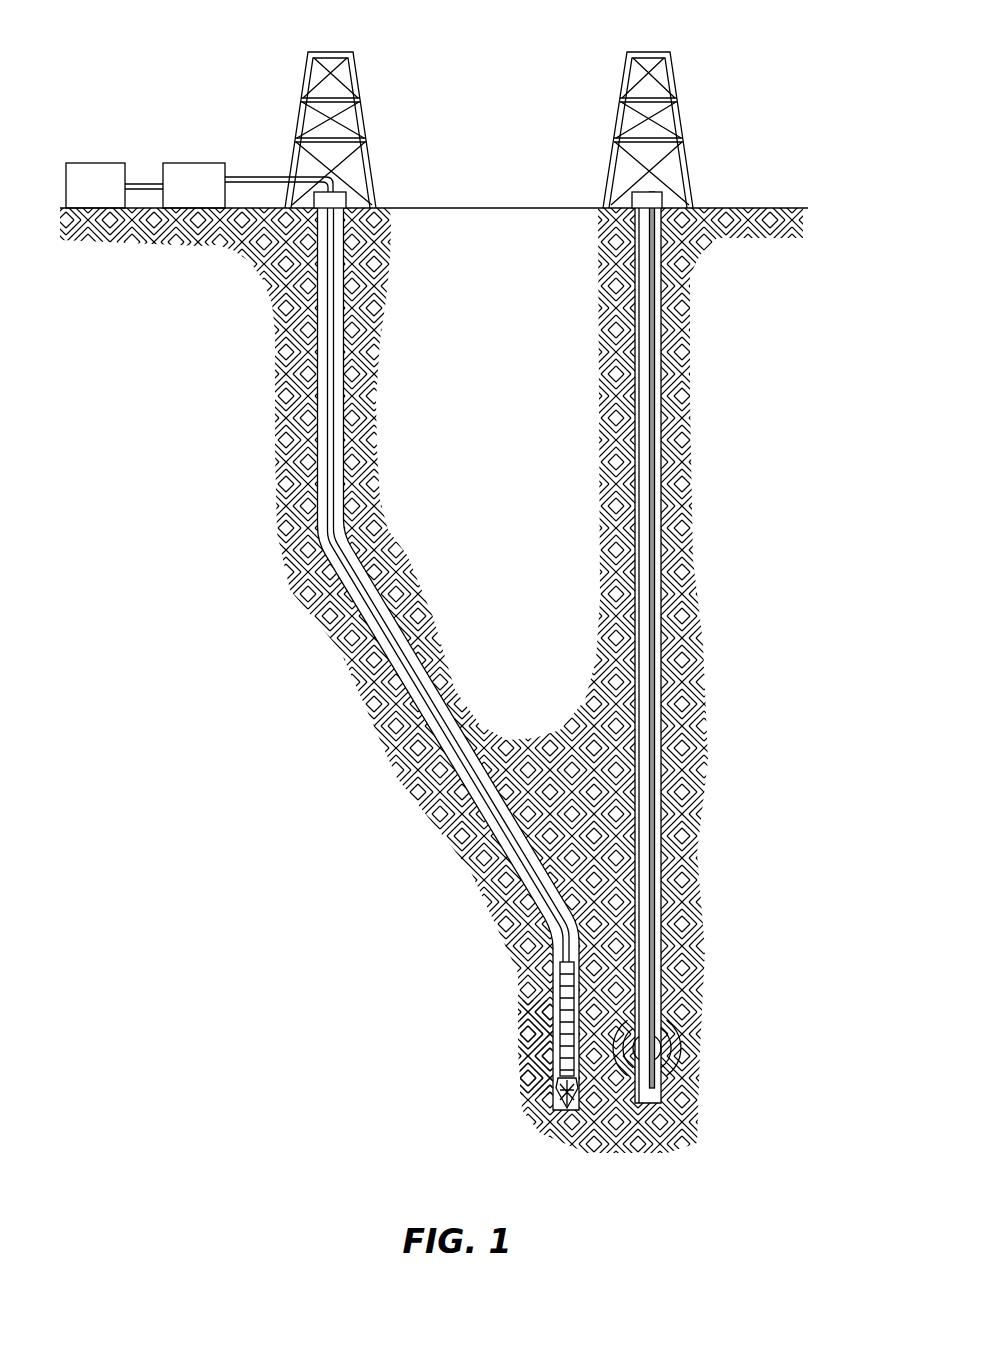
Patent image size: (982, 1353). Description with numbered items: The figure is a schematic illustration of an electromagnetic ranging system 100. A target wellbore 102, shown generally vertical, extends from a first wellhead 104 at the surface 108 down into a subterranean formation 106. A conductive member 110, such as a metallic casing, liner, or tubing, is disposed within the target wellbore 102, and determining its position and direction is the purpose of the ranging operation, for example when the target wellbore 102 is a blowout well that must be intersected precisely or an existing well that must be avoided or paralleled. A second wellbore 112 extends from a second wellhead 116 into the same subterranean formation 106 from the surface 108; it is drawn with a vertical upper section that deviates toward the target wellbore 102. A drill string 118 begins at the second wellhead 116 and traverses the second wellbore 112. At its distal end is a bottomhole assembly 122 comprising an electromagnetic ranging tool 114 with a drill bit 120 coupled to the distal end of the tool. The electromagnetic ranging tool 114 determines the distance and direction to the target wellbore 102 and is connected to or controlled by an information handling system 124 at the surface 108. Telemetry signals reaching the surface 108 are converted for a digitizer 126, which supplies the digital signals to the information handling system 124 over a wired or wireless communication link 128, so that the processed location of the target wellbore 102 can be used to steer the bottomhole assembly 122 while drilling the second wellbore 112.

The electromagnetic ranging system 100 is at (273, 718).
The target wellbore 102 is at (662, 354).
The first wellhead 104 is at (663, 199).
The subterranean formation 106 is at (598, 815).
The surface 108 is at (485, 207).
The conductive member 110 is at (656, 720).
The second wellbore 112 is at (322, 373).
The electromagnetic ranging tool 114 is at (564, 998).
The second wellhead 116 is at (345, 199).
The drill string 118 is at (375, 622).
The drill bit 120 is at (565, 1107).
The bottomhole assembly 122 is at (525, 1049).
The information handling system 124 is at (112, 197).
The digitizer 126 is at (211, 197).
The communication link 128 is at (145, 183).